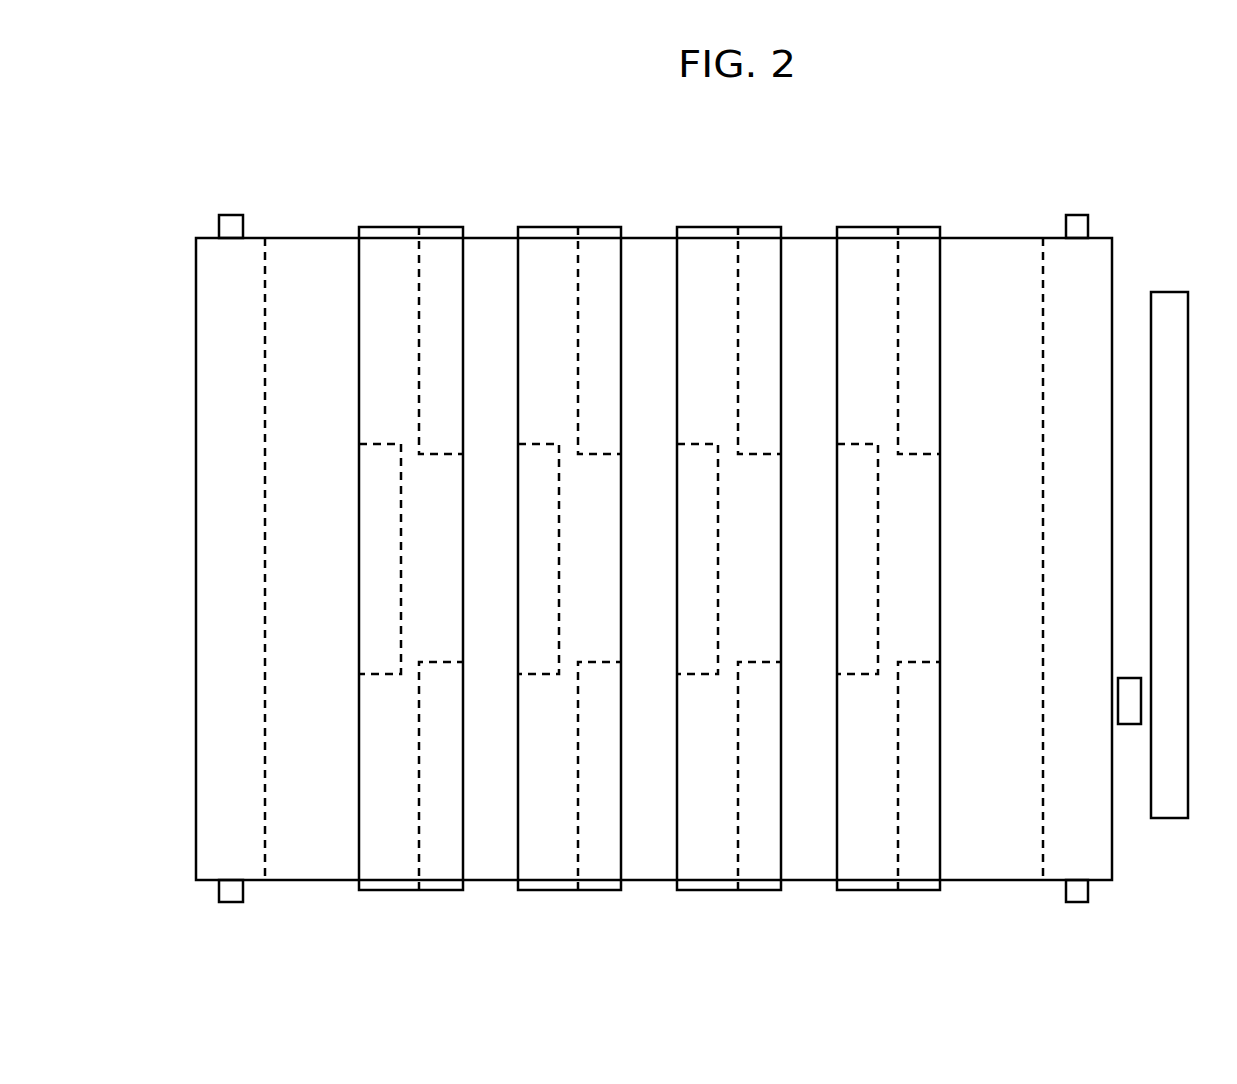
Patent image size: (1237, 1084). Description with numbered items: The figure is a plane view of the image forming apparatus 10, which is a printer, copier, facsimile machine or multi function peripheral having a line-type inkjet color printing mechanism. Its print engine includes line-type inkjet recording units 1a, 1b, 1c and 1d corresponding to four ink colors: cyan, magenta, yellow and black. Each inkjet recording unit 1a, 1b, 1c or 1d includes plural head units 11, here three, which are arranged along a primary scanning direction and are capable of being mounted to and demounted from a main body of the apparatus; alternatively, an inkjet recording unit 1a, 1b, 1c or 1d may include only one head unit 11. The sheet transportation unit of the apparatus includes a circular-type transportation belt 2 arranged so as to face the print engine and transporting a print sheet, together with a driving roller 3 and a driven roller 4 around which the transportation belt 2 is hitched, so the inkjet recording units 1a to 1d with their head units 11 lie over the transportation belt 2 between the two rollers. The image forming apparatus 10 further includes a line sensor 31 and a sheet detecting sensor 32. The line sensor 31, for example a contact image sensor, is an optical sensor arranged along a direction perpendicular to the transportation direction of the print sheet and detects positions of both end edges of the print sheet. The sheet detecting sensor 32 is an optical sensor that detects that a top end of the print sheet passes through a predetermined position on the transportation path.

The image forming apparatus 10 is at (1199, 164).
The transportation belt 2 is at (998, 250).
The driving roller 3 is at (219, 228).
The driven roller 4 is at (1090, 228).
The inkjet recording unit 1a is at (850, 226).
The inkjet recording unit 1b is at (693, 226).
The inkjet recording unit 1c is at (532, 226).
The inkjet recording unit 1d is at (373, 226).
The head unit 11 is at (450, 262).
The line sensor 31 is at (1170, 818).
The sheet detecting sensor 32 is at (1128, 724).